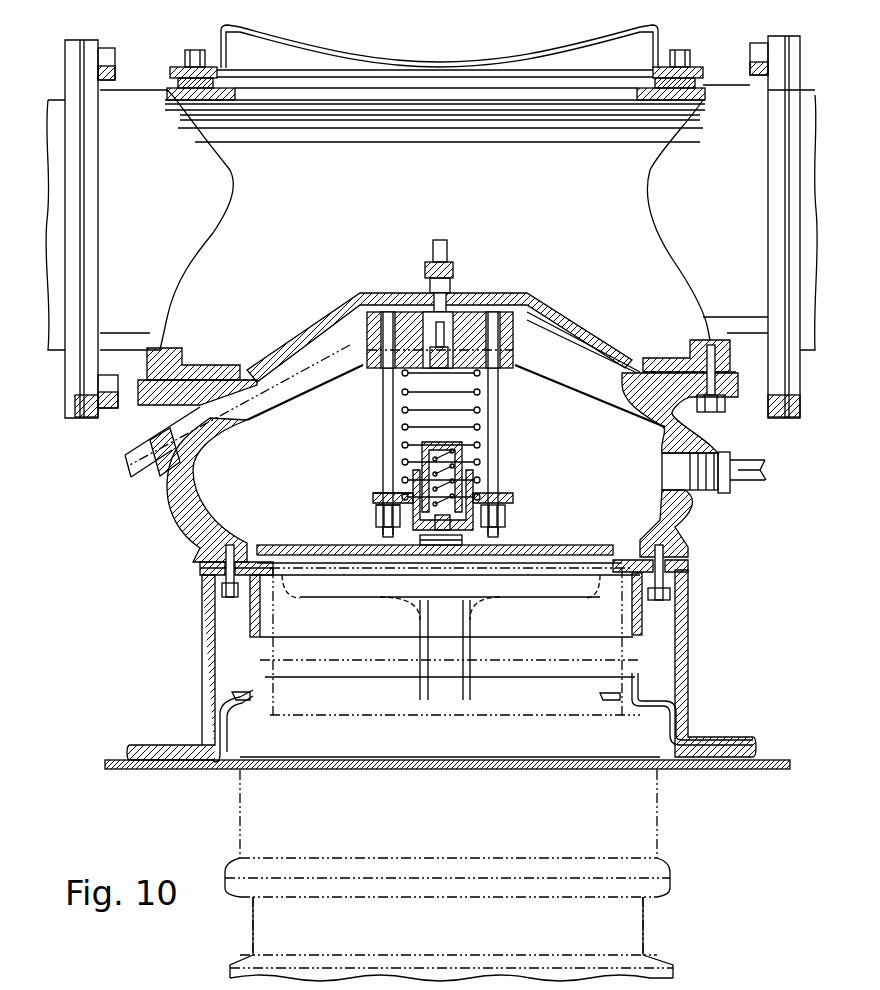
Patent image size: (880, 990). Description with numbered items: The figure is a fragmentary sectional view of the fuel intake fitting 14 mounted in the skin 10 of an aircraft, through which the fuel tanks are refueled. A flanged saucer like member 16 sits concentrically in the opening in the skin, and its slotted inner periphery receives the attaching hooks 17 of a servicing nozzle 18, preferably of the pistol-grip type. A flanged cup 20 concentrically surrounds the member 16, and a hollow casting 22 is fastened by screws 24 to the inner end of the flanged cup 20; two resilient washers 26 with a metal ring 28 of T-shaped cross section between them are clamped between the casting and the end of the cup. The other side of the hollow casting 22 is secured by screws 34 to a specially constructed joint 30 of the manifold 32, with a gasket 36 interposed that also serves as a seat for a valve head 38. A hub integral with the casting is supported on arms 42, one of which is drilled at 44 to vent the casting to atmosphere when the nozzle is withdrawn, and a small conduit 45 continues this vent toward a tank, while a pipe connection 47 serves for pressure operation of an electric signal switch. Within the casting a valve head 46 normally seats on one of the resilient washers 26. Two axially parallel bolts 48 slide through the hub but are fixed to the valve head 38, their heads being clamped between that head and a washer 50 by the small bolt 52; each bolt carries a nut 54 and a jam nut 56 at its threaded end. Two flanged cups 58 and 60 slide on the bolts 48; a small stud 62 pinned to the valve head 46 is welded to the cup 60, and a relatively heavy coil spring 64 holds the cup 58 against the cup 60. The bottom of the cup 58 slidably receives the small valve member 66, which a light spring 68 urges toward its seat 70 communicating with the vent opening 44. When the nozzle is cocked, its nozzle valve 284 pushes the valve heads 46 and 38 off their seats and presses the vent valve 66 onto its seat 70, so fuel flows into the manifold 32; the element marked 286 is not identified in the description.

The skin 10 is at (770, 762).
The fuel intake fitting assembly 14 is at (742, 576).
The flanged saucer like member 16 is at (668, 728).
The attaching hooks 17 is at (245, 690).
The servicing nozzle 18 is at (660, 797).
The flanged cup 20 is at (690, 628).
The hollow casting 22 is at (207, 540).
The screws 24 is at (250, 604).
The resilient washers 26 is at (210, 565).
The metal ring 28 is at (690, 560).
The joint 30 is at (158, 228).
The manifold 32 is at (57, 313).
The screws 34 is at (105, 67).
The gasket 36 is at (205, 362).
The valve head 38 is at (304, 321).
The arms 42 is at (270, 405).
The vent opening 44 is at (300, 385).
The small conduit 45 is at (140, 475).
The valve head 46 is at (290, 545).
The pipe connection 47 is at (738, 462).
The bolts 48 is at (497, 480).
The washer 50 is at (513, 322).
The small bolt 52 is at (448, 242).
The nut 54 is at (505, 510).
The jam nut 56 is at (505, 525).
The flanged cup 58 is at (372, 495).
The flanged cup 60 is at (373, 512).
The small stud 62 is at (440, 565).
The coil spring 64 is at (480, 396).
The small valve member 66 is at (463, 443).
The light spring 68 is at (470, 462).
The seat 70 is at (450, 360).
The nozzle valve 284 is at (380, 600).
The fan disk 286 is at (290, 605).